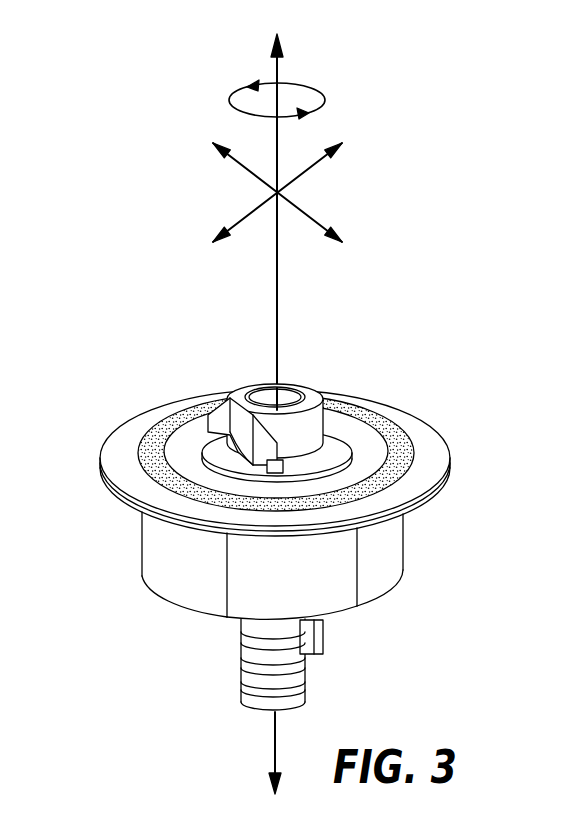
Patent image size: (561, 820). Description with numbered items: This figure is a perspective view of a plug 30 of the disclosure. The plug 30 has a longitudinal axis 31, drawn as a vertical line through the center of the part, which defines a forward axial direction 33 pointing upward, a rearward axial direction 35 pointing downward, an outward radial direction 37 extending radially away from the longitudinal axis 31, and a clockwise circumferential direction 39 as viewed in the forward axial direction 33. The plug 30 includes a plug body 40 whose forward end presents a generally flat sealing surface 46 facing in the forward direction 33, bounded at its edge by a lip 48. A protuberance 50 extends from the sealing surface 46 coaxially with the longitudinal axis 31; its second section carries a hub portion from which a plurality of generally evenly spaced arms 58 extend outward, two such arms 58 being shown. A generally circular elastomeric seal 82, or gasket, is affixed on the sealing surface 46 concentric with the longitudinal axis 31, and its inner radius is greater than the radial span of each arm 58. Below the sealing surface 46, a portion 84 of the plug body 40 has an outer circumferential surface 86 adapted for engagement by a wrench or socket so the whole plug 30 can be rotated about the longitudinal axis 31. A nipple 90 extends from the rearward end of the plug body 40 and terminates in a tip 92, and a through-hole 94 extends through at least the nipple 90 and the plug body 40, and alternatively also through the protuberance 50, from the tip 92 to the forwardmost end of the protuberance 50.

The plug 30 is at (116, 406).
The longitudinal axis 31 is at (278, 310).
The forward axial direction 33 is at (292, 33).
The rearward axial direction 35 is at (289, 816).
The outward radial direction 37 is at (209, 155).
The clockwise circumferential direction 39 is at (293, 99).
The plug body 40 is at (177, 563).
The sealing surface 46 is at (423, 452).
The lip 48 is at (450, 470).
The protuberance 50 is at (233, 440).
The arms 58 is at (255, 417).
The elastomeric seal 82 is at (388, 422).
The portion of the plug body 84 is at (383, 557).
The outer circumferential surface 86 is at (380, 560).
The nipple 90 is at (237, 650).
The tip 92 is at (262, 712).
The through-hole 94 is at (288, 392).